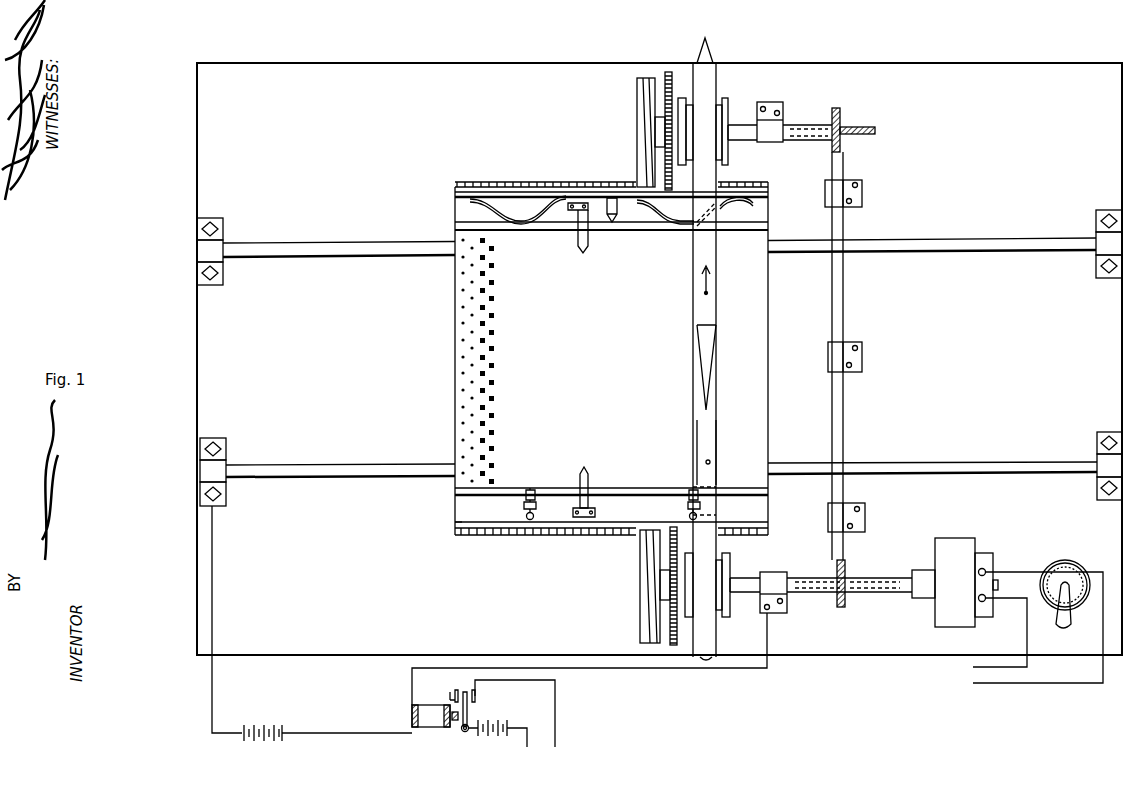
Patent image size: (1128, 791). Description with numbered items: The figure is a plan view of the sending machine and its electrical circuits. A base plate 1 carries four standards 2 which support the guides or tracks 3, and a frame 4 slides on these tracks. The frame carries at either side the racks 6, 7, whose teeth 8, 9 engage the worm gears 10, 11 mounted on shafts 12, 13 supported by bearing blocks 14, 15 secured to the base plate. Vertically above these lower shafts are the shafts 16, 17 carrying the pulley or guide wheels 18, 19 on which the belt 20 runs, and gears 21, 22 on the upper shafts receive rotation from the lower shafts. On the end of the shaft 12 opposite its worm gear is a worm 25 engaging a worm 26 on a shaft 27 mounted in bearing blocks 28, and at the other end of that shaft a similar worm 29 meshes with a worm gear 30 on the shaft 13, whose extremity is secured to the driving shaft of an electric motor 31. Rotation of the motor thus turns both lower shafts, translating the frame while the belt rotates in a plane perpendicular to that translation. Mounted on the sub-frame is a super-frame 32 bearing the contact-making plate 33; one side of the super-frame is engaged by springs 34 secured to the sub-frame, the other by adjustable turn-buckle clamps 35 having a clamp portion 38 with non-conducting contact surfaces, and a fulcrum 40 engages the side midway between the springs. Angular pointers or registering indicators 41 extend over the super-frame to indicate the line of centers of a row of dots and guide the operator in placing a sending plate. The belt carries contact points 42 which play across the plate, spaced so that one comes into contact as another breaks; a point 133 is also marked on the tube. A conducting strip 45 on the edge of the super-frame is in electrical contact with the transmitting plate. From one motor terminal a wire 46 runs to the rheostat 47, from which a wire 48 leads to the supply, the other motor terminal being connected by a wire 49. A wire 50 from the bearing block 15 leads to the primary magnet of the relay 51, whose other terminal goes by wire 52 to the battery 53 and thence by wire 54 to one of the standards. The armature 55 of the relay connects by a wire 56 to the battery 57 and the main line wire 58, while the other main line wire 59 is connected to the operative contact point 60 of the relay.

The base plate 1 is at (659, 359).
The standards 2 is at (224, 230).
The guides or tracks 3 is at (957, 241).
The frame 4 is at (611, 505).
The rack 6 is at (465, 191).
The rack 7 is at (465, 524).
The teeth 8 is at (545, 184).
The teeth 9 is at (540, 537).
The worm gear 10 is at (641, 133).
The worm gear 11 is at (645, 614).
The shaft 12 is at (744, 130).
The shaft 13 is at (748, 590).
The bearing block 14 is at (771, 102).
The bearing block 15 is at (774, 572).
The shaft 16 is at (733, 140).
The shaft 17 is at (735, 578).
The pulley or guide wheel 18 is at (717, 80).
The pulley or guide wheel 19 is at (718, 625).
The belt 20 is at (706, 452).
The gear 21 is at (668, 72).
The gear 22 is at (677, 625).
The worm 25 is at (836, 108).
The worm 26 is at (872, 127).
The shaft 27 is at (840, 328).
The bearing blocks 28 is at (830, 200).
The worm 29 is at (873, 580).
The worm gear 30 is at (843, 607).
The electric motor 31 is at (955, 582).
The super-frame 32 is at (456, 490).
The contact-making plate 33 is at (513, 361).
The pivot point 133 is at (710, 460).
The springs 34 is at (548, 224).
The adjustable turn-buckle clamps 35 is at (526, 517).
The clamp portion 38 is at (533, 491).
The fulcrum 40 is at (617, 208).
The angular pointers or registering indicators 41 is at (582, 253).
The contact points 42 is at (705, 38).
The strip of conducting material 45 is at (553, 230).
The wire 46 is at (1016, 570).
The rheostat 47 is at (1077, 569).
The wire 48 is at (1067, 684).
The wire 49 is at (1027, 667).
The wire 50 is at (412, 693).
The relay 51 is at (436, 728).
The wire 52 is at (347, 723).
The battery 53 is at (262, 726).
The wire 54 is at (213, 600).
The armature 55 is at (468, 712).
The wire 56 is at (466, 732).
The battery 57 is at (497, 736).
The main line wire 58 is at (527, 727).
The main line wire 59 is at (555, 724).
The operative contact point 60 is at (450, 694).